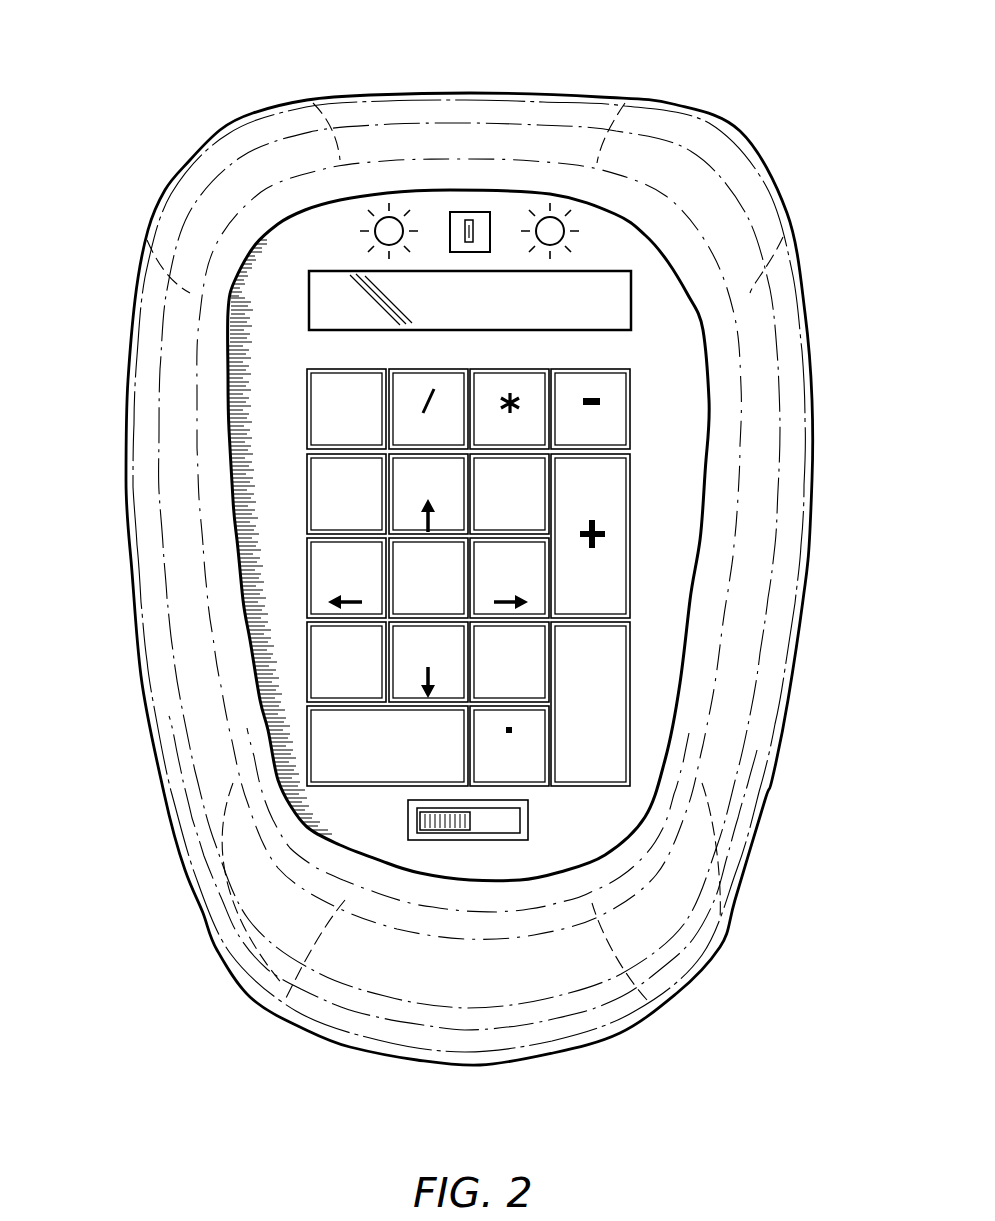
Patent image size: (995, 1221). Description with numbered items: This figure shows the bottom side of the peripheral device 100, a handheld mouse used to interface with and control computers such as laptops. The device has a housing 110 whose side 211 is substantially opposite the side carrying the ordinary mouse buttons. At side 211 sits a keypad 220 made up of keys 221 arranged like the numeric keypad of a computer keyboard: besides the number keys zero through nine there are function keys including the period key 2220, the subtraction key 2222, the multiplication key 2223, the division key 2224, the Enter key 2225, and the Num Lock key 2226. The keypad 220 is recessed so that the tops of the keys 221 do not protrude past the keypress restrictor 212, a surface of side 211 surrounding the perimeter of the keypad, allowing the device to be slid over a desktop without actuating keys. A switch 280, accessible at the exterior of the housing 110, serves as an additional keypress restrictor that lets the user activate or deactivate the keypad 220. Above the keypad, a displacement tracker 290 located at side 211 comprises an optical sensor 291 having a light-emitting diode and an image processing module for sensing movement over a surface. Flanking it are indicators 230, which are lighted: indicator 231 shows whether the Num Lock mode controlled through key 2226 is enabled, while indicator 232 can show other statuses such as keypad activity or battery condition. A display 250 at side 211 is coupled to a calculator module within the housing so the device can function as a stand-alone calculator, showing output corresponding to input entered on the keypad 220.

The peripheral device 100 is at (478, 36).
The housing 110 is at (752, 358).
The side 211 is at (647, 255).
The keypress restrictor 212 is at (188, 472).
The keypad 220 is at (300, 555).
The keys 221 is at (323, 727).
The indicators 230 is at (328, 242).
The indicator 231 is at (385, 222).
The indicator 232 is at (551, 221).
The display 250 is at (347, 298).
The switch 280 is at (416, 820).
The displacement tracker 290 is at (483, 227).
The optical sensor 291 is at (463, 227).
The key 2220 is at (538, 778).
The key 2222 is at (613, 400).
The key 2223 is at (518, 400).
The key 2224 is at (430, 400).
The key 2225 is at (623, 647).
The key 2226 is at (320, 390).